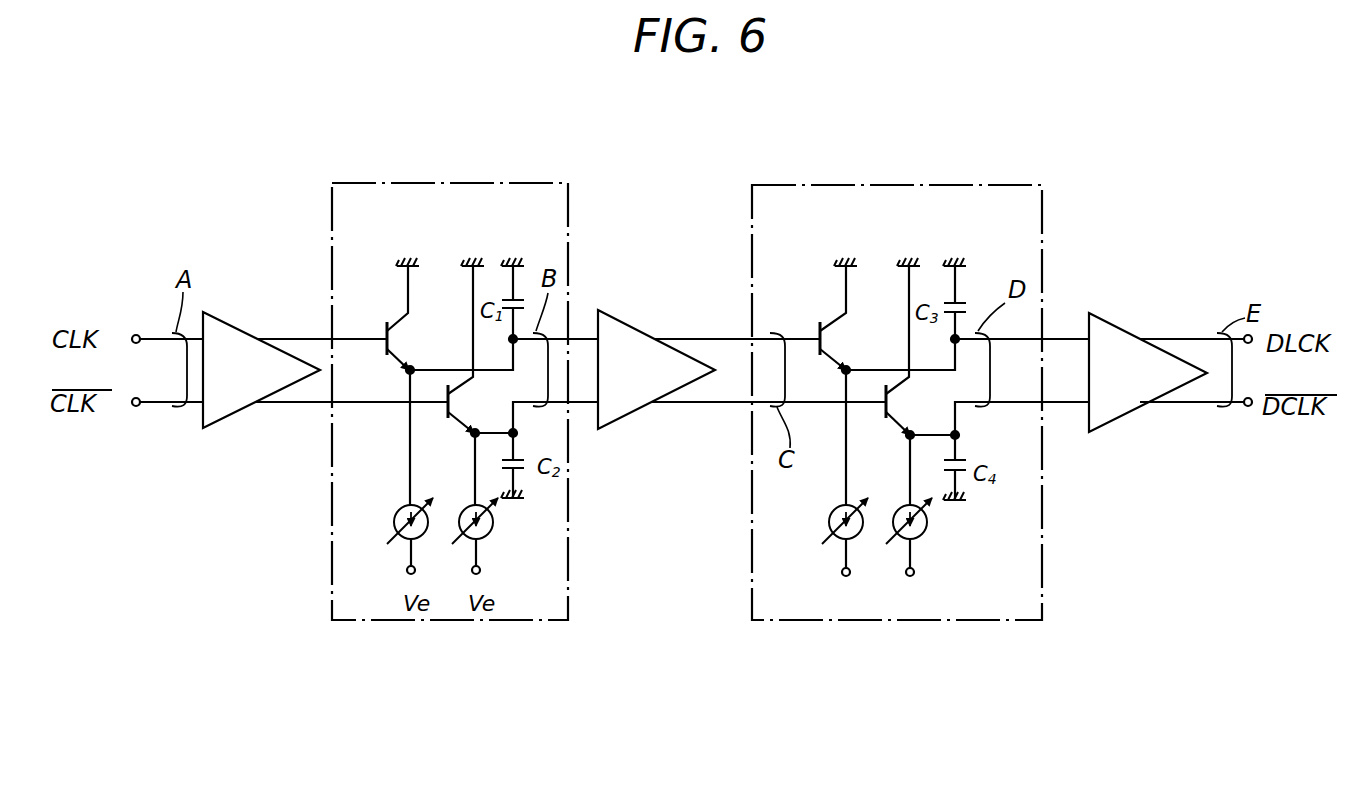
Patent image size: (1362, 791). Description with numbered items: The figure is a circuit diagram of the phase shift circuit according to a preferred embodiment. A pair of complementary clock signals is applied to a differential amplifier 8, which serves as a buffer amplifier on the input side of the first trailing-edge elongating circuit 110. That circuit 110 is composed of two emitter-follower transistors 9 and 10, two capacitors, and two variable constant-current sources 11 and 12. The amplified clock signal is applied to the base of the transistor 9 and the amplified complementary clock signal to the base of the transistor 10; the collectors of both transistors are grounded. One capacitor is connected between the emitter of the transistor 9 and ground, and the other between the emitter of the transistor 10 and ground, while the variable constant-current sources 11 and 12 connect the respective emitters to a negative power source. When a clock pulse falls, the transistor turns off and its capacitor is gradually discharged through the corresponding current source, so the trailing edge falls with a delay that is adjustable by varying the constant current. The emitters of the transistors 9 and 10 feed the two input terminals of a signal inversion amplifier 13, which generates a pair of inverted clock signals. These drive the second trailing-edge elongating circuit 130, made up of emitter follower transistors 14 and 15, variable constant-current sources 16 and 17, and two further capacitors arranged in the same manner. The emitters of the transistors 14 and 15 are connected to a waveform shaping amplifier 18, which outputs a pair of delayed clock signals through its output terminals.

The differential amplifier 8 is at (233, 421).
The emitter-follower transistor 9 is at (380, 322).
The emitter-follower transistor 10 is at (456, 421).
The variable constant-current source 11 is at (403, 545).
The variable constant-current source 12 is at (497, 546).
The signal inversion amplifier 13 is at (628, 325).
The emitter follower transistor 14 is at (826, 320).
The emitter follower transistor 15 is at (893, 425).
The variable constant-current source 16 is at (838, 548).
The variable constant-current source 17 is at (925, 540).
The waveform shaping amplifier 18 is at (1120, 325).
The first trailing-edge elongating circuit 110 is at (500, 183).
The second trailing-edge elongating circuit 130 is at (955, 185).